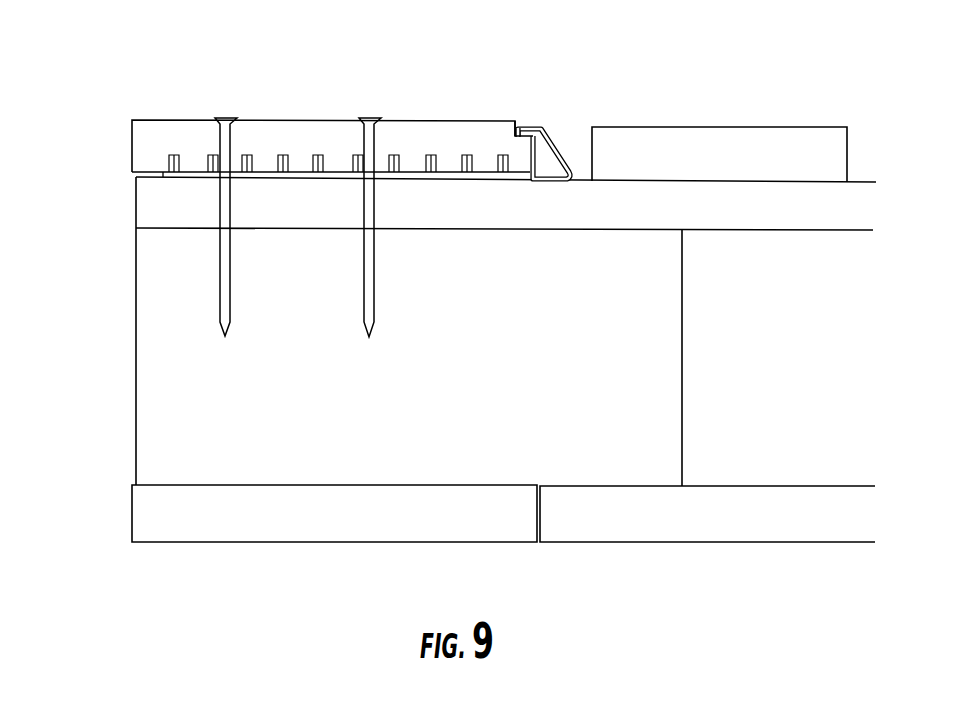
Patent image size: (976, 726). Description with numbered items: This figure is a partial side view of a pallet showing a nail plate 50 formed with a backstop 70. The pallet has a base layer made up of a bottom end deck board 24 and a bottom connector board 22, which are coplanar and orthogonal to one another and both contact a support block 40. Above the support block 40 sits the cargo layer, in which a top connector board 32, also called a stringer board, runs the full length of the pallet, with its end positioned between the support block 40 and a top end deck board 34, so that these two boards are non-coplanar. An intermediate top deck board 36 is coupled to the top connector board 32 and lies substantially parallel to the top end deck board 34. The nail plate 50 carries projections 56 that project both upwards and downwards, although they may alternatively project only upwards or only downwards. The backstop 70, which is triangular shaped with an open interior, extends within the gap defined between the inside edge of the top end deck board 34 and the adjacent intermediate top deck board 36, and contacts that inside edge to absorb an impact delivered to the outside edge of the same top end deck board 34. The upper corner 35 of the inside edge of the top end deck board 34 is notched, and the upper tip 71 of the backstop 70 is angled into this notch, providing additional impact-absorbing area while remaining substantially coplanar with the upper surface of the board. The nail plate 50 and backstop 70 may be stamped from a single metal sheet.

The bottom connector board 22 is at (685, 542).
The bottom end deck board 24 is at (245, 542).
The top connector board 32 is at (135, 212).
The top end deck board 34 is at (177, 120).
The upper corner 35 is at (514, 120).
The intermediate top deck board 36 is at (760, 127).
The support block 40 is at (676, 332).
The nail plate 50 is at (165, 162).
The projection 56 is at (313, 155).
The backstop 70 is at (553, 132).
The upper tip 71 is at (523, 127).